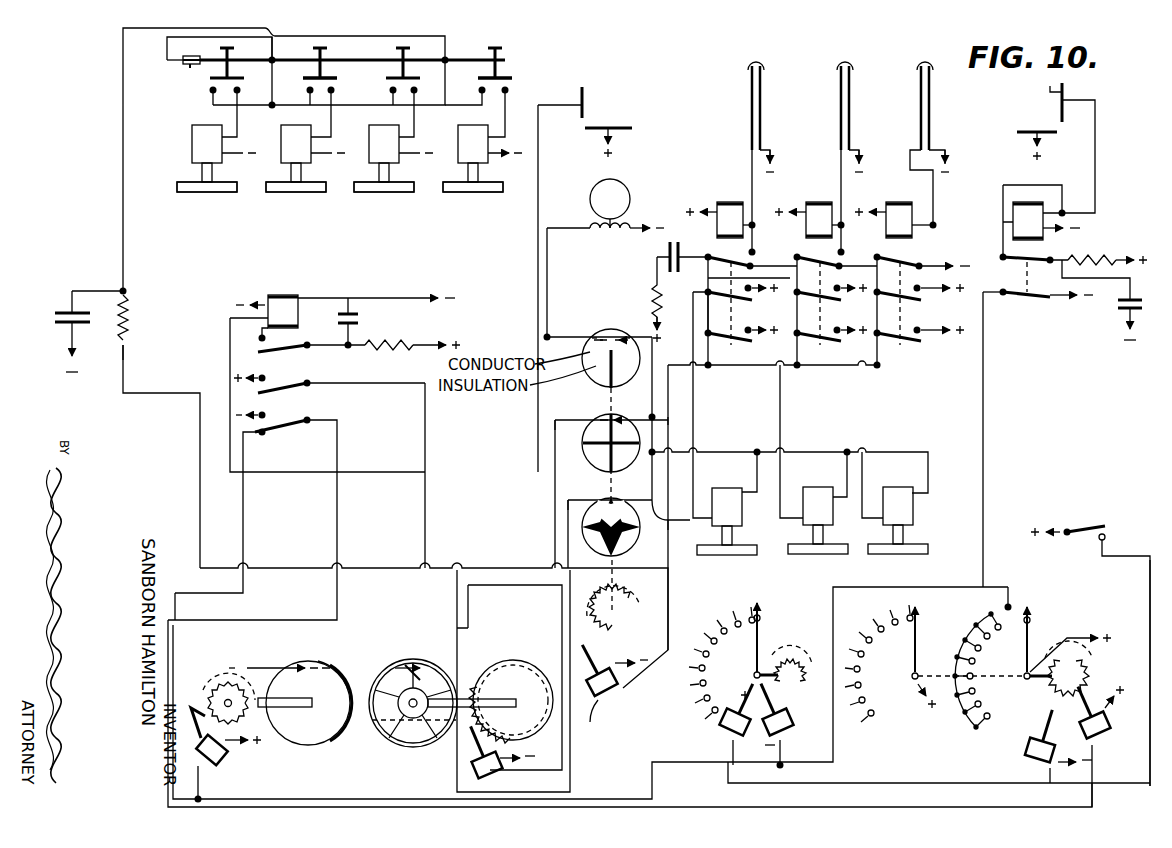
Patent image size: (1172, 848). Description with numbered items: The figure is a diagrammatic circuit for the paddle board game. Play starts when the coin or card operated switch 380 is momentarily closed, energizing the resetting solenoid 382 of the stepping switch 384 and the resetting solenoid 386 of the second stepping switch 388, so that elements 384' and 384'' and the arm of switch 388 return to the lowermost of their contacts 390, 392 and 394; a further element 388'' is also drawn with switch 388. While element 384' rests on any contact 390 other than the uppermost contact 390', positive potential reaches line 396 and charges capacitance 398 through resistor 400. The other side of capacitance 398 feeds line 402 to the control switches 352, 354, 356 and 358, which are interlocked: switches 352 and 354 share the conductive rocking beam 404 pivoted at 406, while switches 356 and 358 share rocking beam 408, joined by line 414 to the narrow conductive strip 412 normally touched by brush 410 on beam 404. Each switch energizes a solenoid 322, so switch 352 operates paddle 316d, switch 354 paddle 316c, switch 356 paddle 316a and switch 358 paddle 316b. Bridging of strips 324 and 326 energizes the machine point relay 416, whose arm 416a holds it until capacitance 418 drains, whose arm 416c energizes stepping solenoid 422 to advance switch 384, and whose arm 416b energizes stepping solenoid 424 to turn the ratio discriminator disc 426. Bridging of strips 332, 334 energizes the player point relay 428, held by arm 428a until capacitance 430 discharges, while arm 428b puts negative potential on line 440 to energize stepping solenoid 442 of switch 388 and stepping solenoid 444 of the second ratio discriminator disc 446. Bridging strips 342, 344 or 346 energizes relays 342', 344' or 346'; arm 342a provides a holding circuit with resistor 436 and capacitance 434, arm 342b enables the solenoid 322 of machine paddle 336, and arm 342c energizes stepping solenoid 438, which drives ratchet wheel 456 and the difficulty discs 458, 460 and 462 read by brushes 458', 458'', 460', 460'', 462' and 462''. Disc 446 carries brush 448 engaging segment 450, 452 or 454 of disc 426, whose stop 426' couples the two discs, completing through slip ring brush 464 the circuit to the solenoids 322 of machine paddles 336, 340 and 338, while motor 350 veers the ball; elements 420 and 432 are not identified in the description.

The line 402 is at (122, 233).
The conductive strip 412 is at (167, 56).
The brush 410 is at (183, 56).
The control switch 352 is at (212, 68).
The pivot 406 is at (272, 60).
The rocking beam 404 is at (275, 36).
The control switch 354 is at (328, 60).
The control switch 356 is at (400, 78).
The line 414 is at (390, 44).
The rocking beam 408 is at (470, 60).
The control switch 358 is at (500, 68).
The solenoid 322 is at (192, 147).
The paddle 316d is at (190, 192).
The paddle 316c is at (278, 192).
The paddle 316a is at (366, 192).
The paddle 316b is at (455, 192).
The capacitance 398 is at (58, 312).
The resistor 400 is at (128, 320).
The line 396 is at (125, 360).
The machine point relay 416 is at (310, 292).
The capacitance 418 is at (360, 318).
The relay arm 416a is at (298, 352).
The resistor 420 is at (378, 350).
The relay arm 416b is at (280, 388).
The relay arm 416c is at (275, 432).
The conductive strip 324 is at (588, 92).
The conductive strip 326 is at (620, 125).
The motor 350 is at (612, 180).
The capacitance 434 is at (640, 238).
The resistor 436 is at (648, 280).
The relay arm 342a is at (727, 253).
The conductor strips 342 is at (767, 150).
The conductor strips 344 is at (851, 150).
The conductor strips 346 is at (925, 136).
The relay 342' is at (719, 192).
The relay 344' is at (808, 200).
The relay 346' is at (894, 206).
The relay arm 342b is at (737, 308).
The relay arm 342c is at (735, 343).
The line 440 is at (983, 360).
The conductive strip 332 is at (1049, 148).
The conductive strip 334 is at (1027, 130).
The player point relay 428 is at (1082, 240).
The relay arm 428a is at (1025, 268).
The resistor 432 is at (1100, 262).
The relay arm 428b is at (1025, 322).
The capacitance 430 is at (1115, 310).
The coin or card operated switch 380 is at (1090, 522).
The difficulty control disc 462 is at (611, 370).
The brush 462' is at (576, 322).
The brush 462'' is at (623, 322).
The difficulty control disc 460 is at (613, 456).
The brush 460' is at (566, 410).
The brush 460'' is at (699, 407).
The difficulty control disc 458 is at (620, 532).
The brush 458' is at (529, 495).
The brush 458'' is at (688, 532).
The machine paddle 336 is at (748, 556).
The machine paddle 340 is at (836, 557).
The machine paddle 338 is at (926, 557).
The slip ring brush 464 is at (300, 680).
The second ratio discriminator disc 446 is at (312, 745).
The brush 448 is at (355, 672).
The conductive segment 452 is at (370, 720).
The stepping solenoid 444 is at (222, 768).
The ratio discriminator disc 426 is at (413, 720).
The stop 426' is at (406, 642).
The conductive segment 450 is at (418, 672).
The conductive segment 454 is at (440, 740).
The stepping solenoid 424 is at (498, 776).
The ratchet wheel 456 is at (632, 625).
The stepping solenoid 438 is at (609, 685).
The second stepping switch 388 is at (781, 640).
The contacts 394 is at (697, 688).
The gear 388'' is at (788, 656).
The resetting solenoid 386 is at (715, 722).
The stepping solenoid 442 is at (784, 723).
The switch arm 384'' is at (937, 657).
The contacts 392 is at (878, 716).
The stepping switch 384 is at (1064, 632).
The switch element 384' is at (1062, 618).
The uppermost contact 390' is at (1069, 625).
The contacts 390 is at (991, 670).
The stepping solenoid 422 is at (1108, 728).
The resetting solenoid 382 is at (1025, 748).